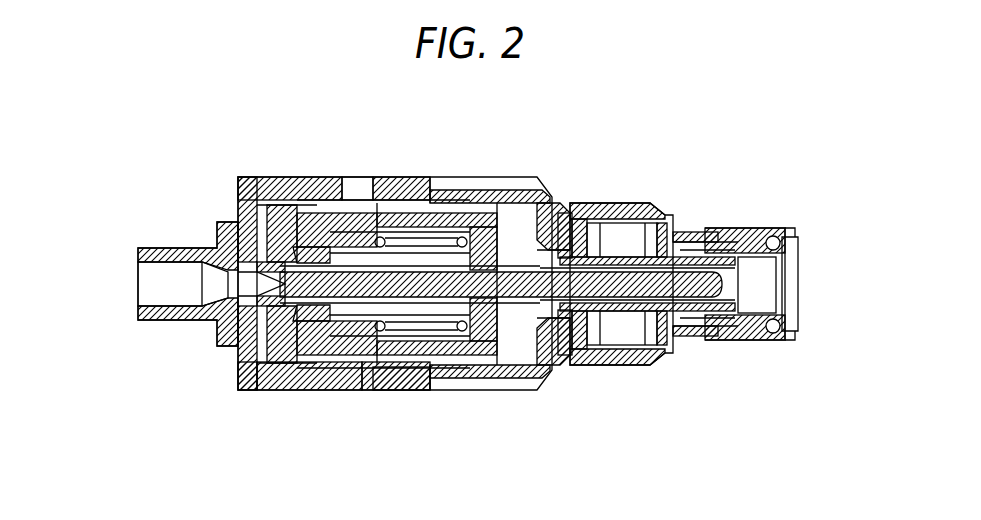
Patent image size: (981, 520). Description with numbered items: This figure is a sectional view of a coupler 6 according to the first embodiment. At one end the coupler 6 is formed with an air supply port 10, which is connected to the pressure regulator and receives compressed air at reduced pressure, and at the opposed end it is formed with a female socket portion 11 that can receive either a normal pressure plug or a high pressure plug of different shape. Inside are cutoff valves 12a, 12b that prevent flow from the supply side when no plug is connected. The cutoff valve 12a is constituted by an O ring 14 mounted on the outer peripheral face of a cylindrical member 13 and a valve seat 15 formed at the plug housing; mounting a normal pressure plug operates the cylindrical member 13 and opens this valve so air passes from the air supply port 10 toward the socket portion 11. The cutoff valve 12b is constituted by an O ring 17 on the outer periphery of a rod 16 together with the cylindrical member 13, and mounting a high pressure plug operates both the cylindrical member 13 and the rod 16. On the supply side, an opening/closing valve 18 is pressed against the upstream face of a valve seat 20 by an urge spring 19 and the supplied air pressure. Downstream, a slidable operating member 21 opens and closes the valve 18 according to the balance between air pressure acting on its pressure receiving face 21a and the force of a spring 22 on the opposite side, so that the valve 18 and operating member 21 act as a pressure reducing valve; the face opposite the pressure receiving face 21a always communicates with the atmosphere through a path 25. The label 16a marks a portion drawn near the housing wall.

The coupler 6 is at (166, 145).
The air supply port 10 is at (160, 291).
The socket portion 11 is at (775, 287).
The cutoff valve 12a is at (586, 212).
The cutoff valve 12b is at (543, 382).
The cylindrical member 13 is at (630, 203).
The O ring 14 is at (552, 200).
The valve seat 15 is at (572, 205).
The rod 16 is at (642, 368).
The housing lip 16a is at (237, 372).
The O ring 17 is at (513, 379).
The opening/closing valve 18 is at (237, 222).
The urge spring 19 is at (205, 272).
The valve seat 20 is at (290, 177).
The operating member 21 is at (383, 391).
The pressure receiving face 21a is at (300, 391).
The spring 22 is at (404, 178).
The path 25 is at (572, 368).